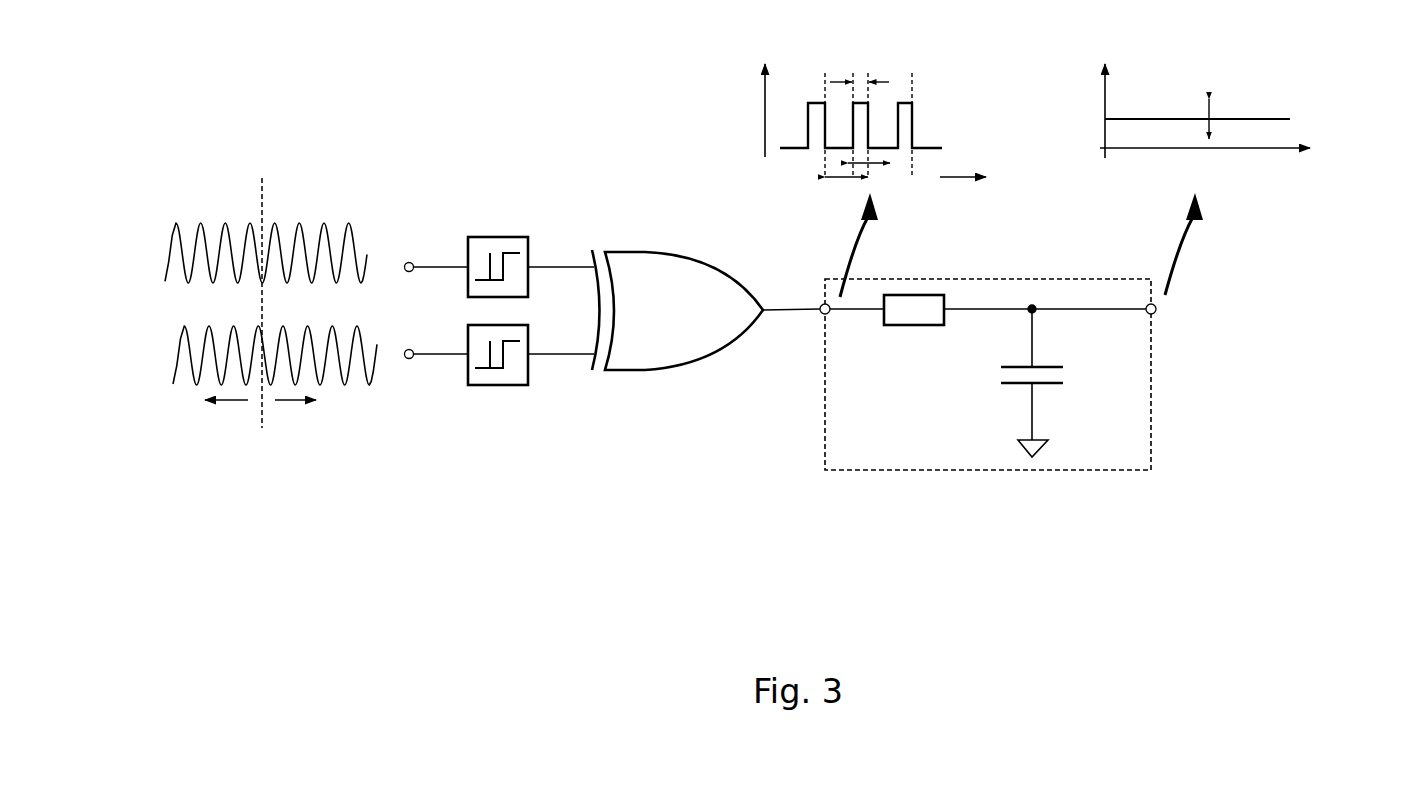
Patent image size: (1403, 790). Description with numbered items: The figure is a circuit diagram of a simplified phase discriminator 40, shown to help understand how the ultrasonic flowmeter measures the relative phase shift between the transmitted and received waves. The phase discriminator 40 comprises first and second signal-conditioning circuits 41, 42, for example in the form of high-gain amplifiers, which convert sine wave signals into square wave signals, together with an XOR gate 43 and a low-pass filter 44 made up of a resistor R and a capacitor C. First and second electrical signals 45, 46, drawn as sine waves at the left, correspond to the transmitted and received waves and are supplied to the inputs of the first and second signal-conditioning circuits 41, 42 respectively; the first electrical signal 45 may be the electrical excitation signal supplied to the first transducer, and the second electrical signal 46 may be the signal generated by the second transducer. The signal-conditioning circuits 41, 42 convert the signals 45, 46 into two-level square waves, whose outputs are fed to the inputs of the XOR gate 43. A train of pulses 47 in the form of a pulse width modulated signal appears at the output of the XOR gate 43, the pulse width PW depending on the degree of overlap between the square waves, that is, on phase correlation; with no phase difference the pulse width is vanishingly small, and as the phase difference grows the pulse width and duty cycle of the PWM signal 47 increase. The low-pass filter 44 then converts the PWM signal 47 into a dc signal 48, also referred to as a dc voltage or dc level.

The phase discriminator 40 is at (607, 131).
The first signal-conditioning circuit 41 is at (477, 237).
The second signal-conditioning circuit 42 is at (478, 385).
The XOR gate 43 is at (684, 262).
The low-pass filter 44 is at (1153, 394).
The first electrical signal 45 is at (147, 236).
The second electrical signal 46 is at (147, 341).
The train of pulses 47 is at (932, 96).
The dc signal 48 is at (1290, 74).